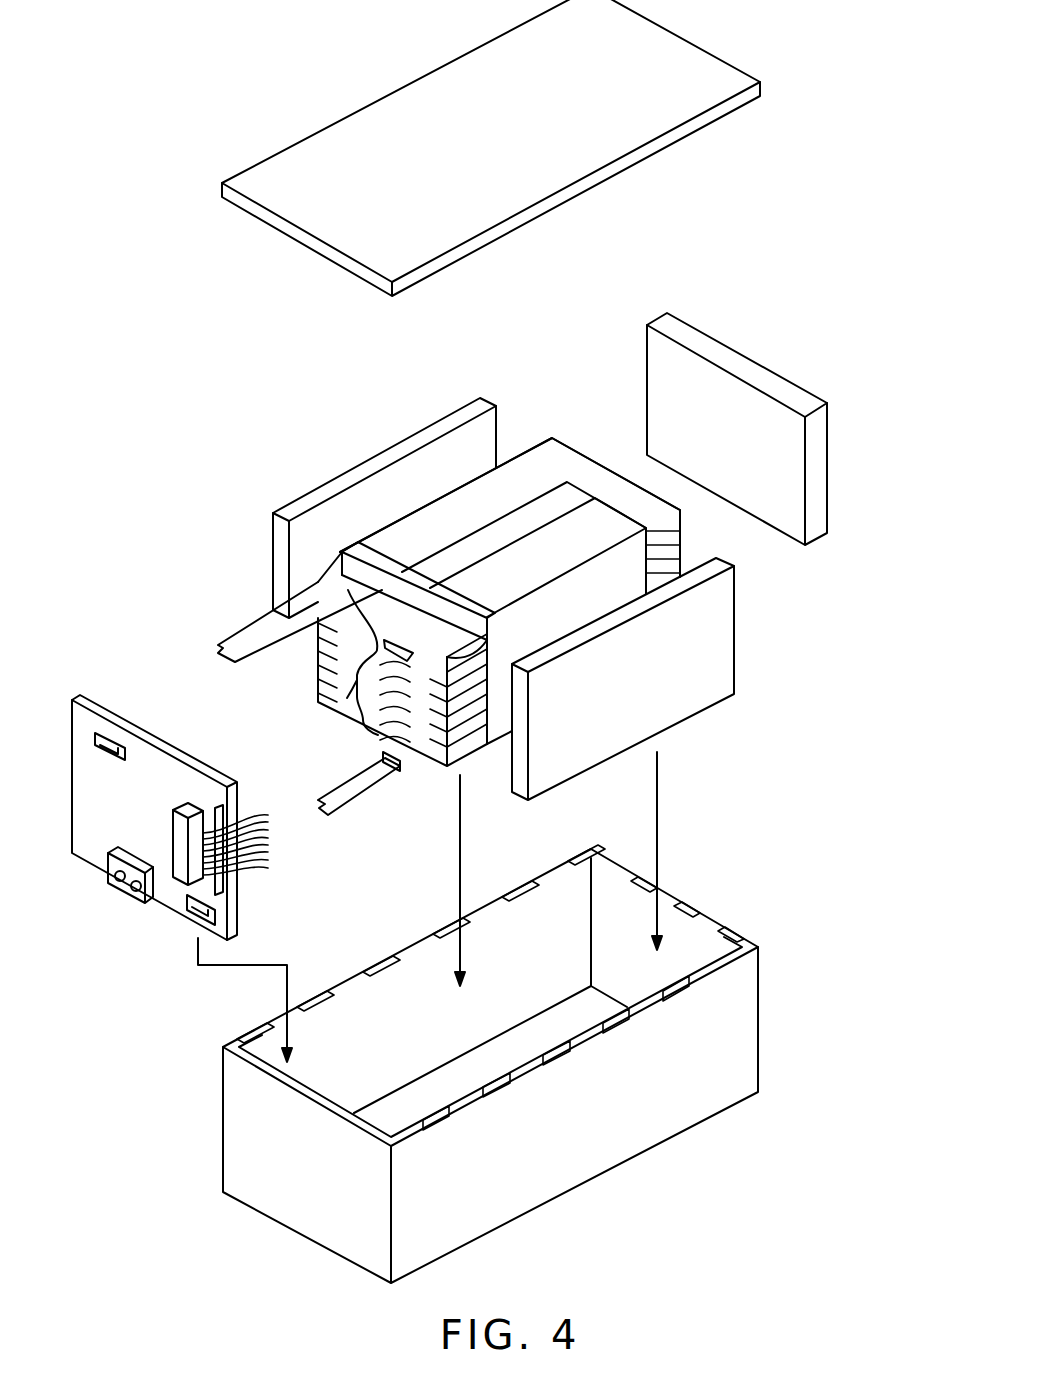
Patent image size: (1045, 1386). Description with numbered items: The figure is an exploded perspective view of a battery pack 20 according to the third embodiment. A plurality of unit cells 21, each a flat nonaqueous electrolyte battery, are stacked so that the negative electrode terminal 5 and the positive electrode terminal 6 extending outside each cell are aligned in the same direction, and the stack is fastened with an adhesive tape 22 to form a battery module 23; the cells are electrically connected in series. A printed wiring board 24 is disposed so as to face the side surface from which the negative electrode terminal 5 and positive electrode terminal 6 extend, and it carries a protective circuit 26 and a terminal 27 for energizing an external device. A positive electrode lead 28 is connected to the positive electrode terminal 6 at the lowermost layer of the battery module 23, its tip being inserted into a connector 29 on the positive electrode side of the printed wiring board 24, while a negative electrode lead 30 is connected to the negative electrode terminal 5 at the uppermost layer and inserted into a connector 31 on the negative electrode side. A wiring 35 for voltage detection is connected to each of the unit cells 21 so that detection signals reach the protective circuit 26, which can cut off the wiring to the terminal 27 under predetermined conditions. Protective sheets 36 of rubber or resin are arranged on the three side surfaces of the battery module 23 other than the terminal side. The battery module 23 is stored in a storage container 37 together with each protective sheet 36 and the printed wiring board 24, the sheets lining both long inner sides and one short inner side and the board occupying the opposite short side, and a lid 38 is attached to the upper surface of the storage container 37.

The negative electrode terminal 5 is at (320, 590).
The positive electrode terminal 6 is at (413, 650).
The battery pack 20 is at (136, 322).
The unit cell 21 is at (683, 573).
The adhesive tape 22 is at (583, 533).
The battery module 23 is at (438, 507).
The printed wiring board 24 is at (111, 703).
The protective circuit 26 is at (190, 808).
The terminal for energizing an external device 27 is at (133, 892).
The positive electrode lead 28 is at (380, 803).
The connector on the positive electrode side 29 is at (217, 915).
The negative electrode lead 30 is at (236, 632).
The connector on the negative electrode side 31 is at (117, 747).
The wiring for voltage detection 35 is at (357, 697).
The protective sheet 36 is at (348, 480).
The storage container 37 is at (745, 1025).
The lid 38 is at (693, 68).